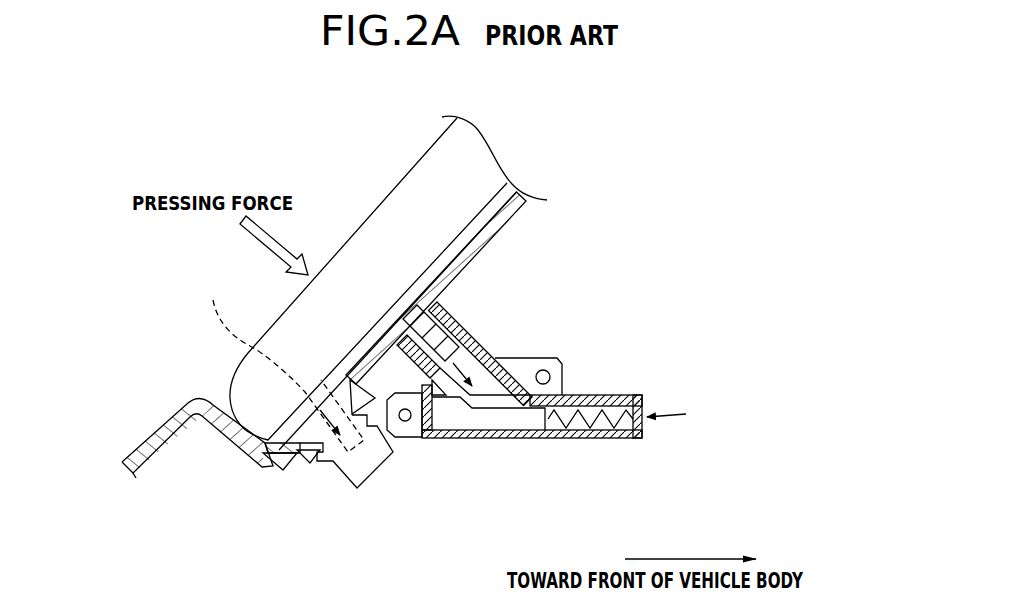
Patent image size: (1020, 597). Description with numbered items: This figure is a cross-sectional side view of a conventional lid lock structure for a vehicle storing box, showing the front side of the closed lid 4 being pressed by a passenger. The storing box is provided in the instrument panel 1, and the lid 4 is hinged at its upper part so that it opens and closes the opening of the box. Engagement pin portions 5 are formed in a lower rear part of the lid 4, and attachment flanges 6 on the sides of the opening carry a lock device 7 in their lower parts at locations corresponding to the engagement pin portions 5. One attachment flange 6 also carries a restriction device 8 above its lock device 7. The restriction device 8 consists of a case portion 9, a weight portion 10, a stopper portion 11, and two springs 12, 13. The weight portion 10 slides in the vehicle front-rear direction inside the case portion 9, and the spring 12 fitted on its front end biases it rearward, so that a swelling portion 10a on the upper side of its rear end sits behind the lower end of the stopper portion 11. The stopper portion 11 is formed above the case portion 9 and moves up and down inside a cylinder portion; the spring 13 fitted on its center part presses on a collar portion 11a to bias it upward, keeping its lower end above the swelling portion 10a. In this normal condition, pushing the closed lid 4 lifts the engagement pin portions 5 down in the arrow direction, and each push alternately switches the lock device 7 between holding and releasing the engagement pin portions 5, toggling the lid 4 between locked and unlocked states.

The instrument panel 1 is at (148, 437).
The lid 4 is at (400, 208).
The engagement pin portions 5 is at (286, 366).
The attachment flanges 6 is at (445, 288).
The lock device 7 is at (331, 478).
The restriction device 8 is at (539, 423).
The case portion 9 is at (674, 413).
The weight portion 10 is at (533, 422).
The swelling portion 10a is at (452, 416).
The stopper portion 11 is at (483, 392).
The collar portion 11a is at (410, 380).
The spring 12 is at (617, 395).
The spring 13 is at (462, 325).